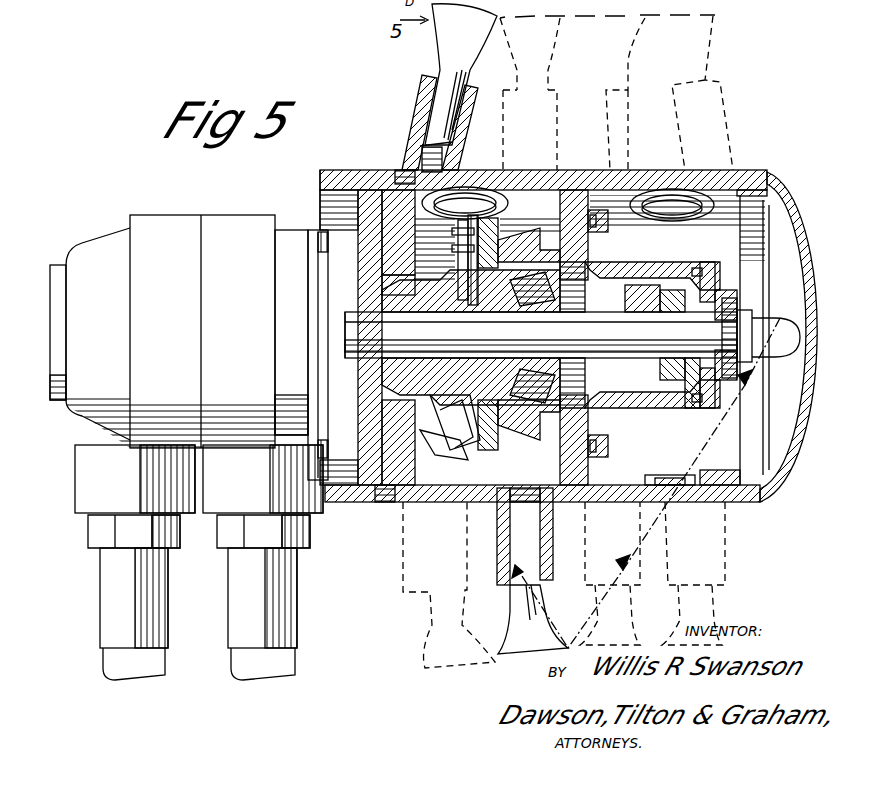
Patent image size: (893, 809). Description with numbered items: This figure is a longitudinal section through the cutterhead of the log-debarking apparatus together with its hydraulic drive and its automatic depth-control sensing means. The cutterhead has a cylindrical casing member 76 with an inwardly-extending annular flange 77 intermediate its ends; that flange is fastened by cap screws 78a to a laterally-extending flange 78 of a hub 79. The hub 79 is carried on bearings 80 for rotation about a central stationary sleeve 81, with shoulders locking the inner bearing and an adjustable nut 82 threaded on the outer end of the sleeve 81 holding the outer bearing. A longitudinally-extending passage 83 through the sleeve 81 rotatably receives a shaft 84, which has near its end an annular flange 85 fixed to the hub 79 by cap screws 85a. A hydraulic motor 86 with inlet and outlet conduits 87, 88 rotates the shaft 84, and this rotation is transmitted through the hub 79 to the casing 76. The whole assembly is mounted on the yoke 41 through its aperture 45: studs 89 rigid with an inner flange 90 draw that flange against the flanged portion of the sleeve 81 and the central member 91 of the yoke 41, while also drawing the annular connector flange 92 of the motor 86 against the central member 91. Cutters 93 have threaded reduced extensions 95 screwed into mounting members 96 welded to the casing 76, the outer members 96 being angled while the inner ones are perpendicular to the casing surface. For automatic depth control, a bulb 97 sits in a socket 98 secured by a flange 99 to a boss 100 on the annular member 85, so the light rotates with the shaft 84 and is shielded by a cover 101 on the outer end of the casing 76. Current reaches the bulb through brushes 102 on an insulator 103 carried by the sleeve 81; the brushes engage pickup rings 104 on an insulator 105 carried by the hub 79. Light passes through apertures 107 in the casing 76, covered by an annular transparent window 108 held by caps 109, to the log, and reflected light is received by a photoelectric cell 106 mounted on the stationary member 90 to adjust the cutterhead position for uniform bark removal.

The yoke 41 is at (352, 170).
The aperture 45 is at (372, 316).
The cylindrical casing member 76 is at (733, 172).
The inwardly-extending annular flange 77 is at (600, 222).
The laterally-extending flange 78 is at (555, 226).
The cap screws 78a is at (620, 212).
The hub 79 is at (588, 290).
The bearings 80 is at (532, 300).
The central stationary sleeve 81 is at (426, 300).
The adjustable nut 82 is at (668, 305).
The longitudinally-extending passage 83 is at (495, 305).
The shaft 84 is at (541, 335).
The annular flange 85 is at (690, 390).
The cap screws 85a is at (712, 265).
The hydraulic motor 86 is at (166, 222).
The inlet conduit 87 is at (285, 609).
The outlet conduit 88 is at (150, 626).
The studs 89 is at (320, 238).
The inner flange 90 is at (397, 175).
The central member 91 is at (362, 463).
The annular connector flange 92 is at (330, 283).
The cutters 93 is at (448, 48).
The reduced extension 95 is at (422, 158).
The mounting member 96 is at (420, 88).
The bulb 97 is at (776, 344).
The socket 98 is at (752, 318).
The flange 99 is at (732, 300).
The boss 100 is at (712, 300).
The cover 101 is at (787, 215).
The brushes 102 is at (452, 232).
The insulator 103 is at (468, 272).
The pickup rings 104 is at (478, 425).
The insulator 105 is at (490, 236).
The photoelectric cell 106 is at (462, 448).
The apertures 107 is at (646, 483).
The transparent safety glass window 108 is at (466, 205).
The caps 109 is at (706, 482).